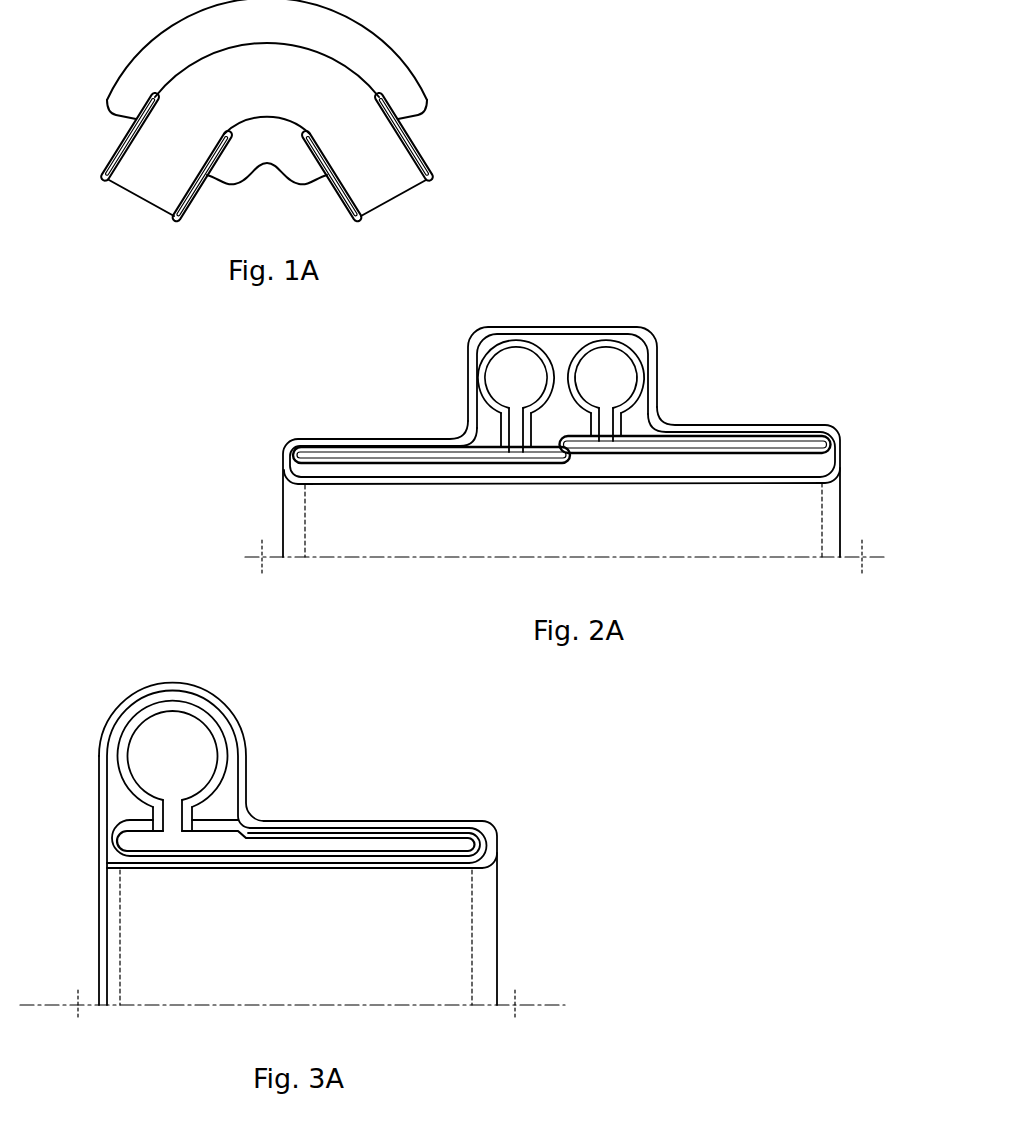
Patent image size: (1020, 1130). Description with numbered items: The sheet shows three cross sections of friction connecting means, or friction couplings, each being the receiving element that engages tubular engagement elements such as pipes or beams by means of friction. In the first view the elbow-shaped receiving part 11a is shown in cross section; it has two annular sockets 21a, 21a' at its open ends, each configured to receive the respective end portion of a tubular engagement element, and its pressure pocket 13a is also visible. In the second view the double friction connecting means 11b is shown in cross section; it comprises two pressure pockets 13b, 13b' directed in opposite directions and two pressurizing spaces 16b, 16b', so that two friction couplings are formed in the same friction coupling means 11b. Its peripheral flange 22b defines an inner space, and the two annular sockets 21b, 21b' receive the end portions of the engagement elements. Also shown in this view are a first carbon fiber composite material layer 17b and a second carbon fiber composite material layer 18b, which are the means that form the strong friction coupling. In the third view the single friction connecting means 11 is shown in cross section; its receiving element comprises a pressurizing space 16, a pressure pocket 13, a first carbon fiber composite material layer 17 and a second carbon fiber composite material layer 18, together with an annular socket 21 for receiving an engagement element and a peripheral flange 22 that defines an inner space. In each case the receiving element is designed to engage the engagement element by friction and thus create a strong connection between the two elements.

In FIG. 1A, the receiving part 11a is at (418, 43).
In FIG. 1A, the pressure pocket 13a is at (405, 154).
In FIG. 1A, the annular socket 21a is at (364, 200).
In FIG. 1A, the annular socket 21a' is at (157, 182).
In FIG. 2A, the friction connecting means 11b is at (583, 301).
In FIG. 2A, the pressure pocket 13b is at (695, 398).
In FIG. 2A, the pressure pocket 13b' is at (431, 411).
In FIG. 2A, the pressurizing space 16b is at (632, 350).
In FIG. 2A, the pressurizing space 16b' is at (516, 354).
In FIG. 2A, the first carbon fiber composite material layer 17b is at (340, 480).
In FIG. 2A, the second carbon fiber composite material layer 18b is at (332, 438).
In FIG. 2A, the annular socket 21b is at (702, 410).
In FIG. 2A, the annular socket 21b' is at (392, 434).
In FIG. 2A, the peripheral flange 22b is at (545, 327).
In FIG. 3A, the friction connecting means 11 is at (515, 841).
In FIG. 3A, the pressure pocket 13 is at (425, 835).
In FIG. 3A, the pressurizing space 16 is at (198, 740).
In FIG. 3A, the first carbon fiber composite material layer 17 is at (443, 868).
In FIG. 3A, the second carbon fiber composite material layer 18 is at (350, 822).
In FIG. 3A, the annular socket 21 is at (463, 822).
In FIG. 3A, the peripheral flange 22 is at (172, 683).